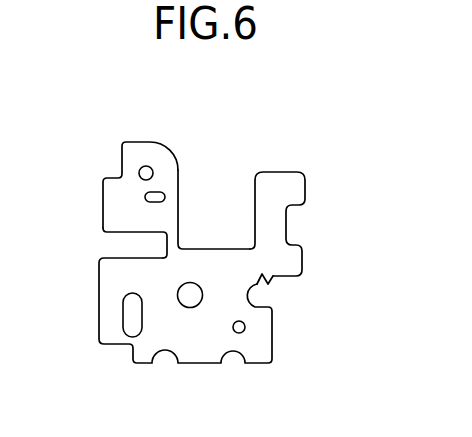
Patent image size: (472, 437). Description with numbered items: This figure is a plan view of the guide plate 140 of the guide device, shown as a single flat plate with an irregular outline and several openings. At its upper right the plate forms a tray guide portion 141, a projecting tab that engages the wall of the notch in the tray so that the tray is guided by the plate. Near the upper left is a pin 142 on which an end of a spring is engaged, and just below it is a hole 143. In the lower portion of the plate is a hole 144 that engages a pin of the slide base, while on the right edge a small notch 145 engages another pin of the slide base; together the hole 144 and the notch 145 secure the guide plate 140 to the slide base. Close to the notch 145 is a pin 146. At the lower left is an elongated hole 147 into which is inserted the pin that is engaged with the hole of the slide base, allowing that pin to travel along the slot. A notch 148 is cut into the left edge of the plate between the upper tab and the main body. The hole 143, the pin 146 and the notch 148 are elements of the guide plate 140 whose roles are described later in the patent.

The guide plate 140 is at (330, 166).
The tray guide portion 141 is at (276, 187).
The pin 142 is at (142, 166).
The hole 143 is at (158, 190).
The hole 144 is at (191, 297).
The notch 145 is at (268, 285).
The pin 146 is at (243, 331).
The elongated hole 147 is at (130, 312).
The notch 148 is at (113, 245).